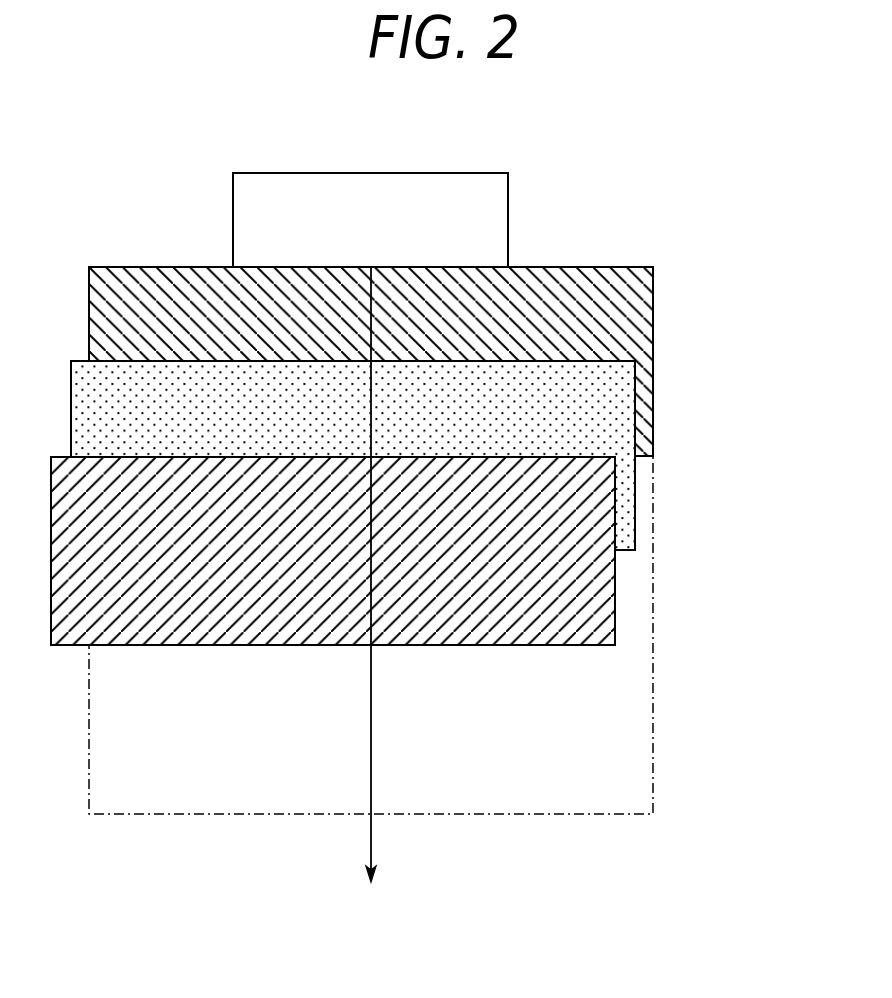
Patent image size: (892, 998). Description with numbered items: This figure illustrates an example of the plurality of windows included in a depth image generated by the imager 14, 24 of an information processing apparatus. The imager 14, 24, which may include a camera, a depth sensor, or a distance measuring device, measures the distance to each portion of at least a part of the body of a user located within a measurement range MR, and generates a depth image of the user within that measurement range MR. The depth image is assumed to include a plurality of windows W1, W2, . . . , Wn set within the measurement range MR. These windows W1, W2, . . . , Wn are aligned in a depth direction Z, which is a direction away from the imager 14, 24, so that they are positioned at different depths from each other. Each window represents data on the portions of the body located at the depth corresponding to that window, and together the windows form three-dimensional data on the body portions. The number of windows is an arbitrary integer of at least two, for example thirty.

The imager 14 is at (437, 220).
The imager 24 is at (508, 220).
The window W1 is at (777, 267).
The window W2 is at (723, 361).
The window Wn is at (668, 457).
The measurement range MR is at (653, 780).
The depth direction Z is at (371, 590).